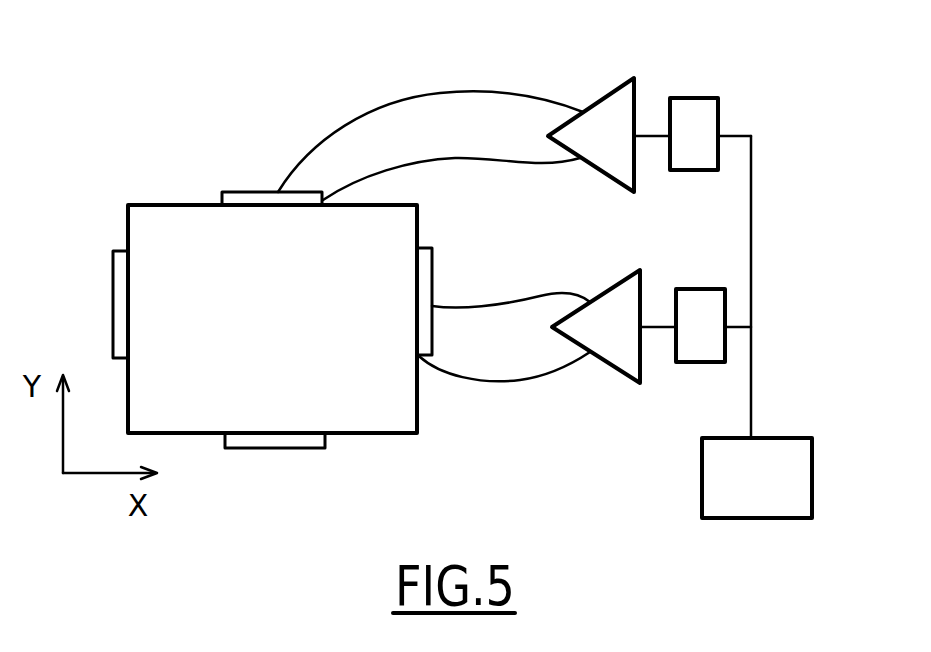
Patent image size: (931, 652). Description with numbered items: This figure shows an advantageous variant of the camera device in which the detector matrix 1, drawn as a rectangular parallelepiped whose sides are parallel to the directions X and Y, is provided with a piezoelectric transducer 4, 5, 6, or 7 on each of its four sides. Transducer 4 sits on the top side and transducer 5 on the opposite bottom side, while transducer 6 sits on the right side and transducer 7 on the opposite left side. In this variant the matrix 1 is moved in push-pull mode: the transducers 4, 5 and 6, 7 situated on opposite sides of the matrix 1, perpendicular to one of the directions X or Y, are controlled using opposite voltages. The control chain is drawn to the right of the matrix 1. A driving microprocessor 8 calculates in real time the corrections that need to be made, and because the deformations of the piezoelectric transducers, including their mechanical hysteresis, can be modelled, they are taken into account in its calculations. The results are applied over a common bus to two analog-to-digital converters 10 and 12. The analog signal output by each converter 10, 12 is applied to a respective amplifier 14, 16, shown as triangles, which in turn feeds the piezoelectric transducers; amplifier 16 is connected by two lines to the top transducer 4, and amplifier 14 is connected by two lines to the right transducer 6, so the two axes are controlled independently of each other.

The matrix 1 is at (134, 189).
The transducer 4 is at (242, 198).
The transducer 5 is at (272, 440).
The transducer 6 is at (422, 283).
The transducer 7 is at (120, 308).
The driving microprocessor 8 is at (782, 485).
The analog-to-digital converter 10 is at (702, 343).
The analog-to-digital converter 12 is at (698, 107).
The amplifier 14 is at (612, 338).
The amplifier 16 is at (610, 118).